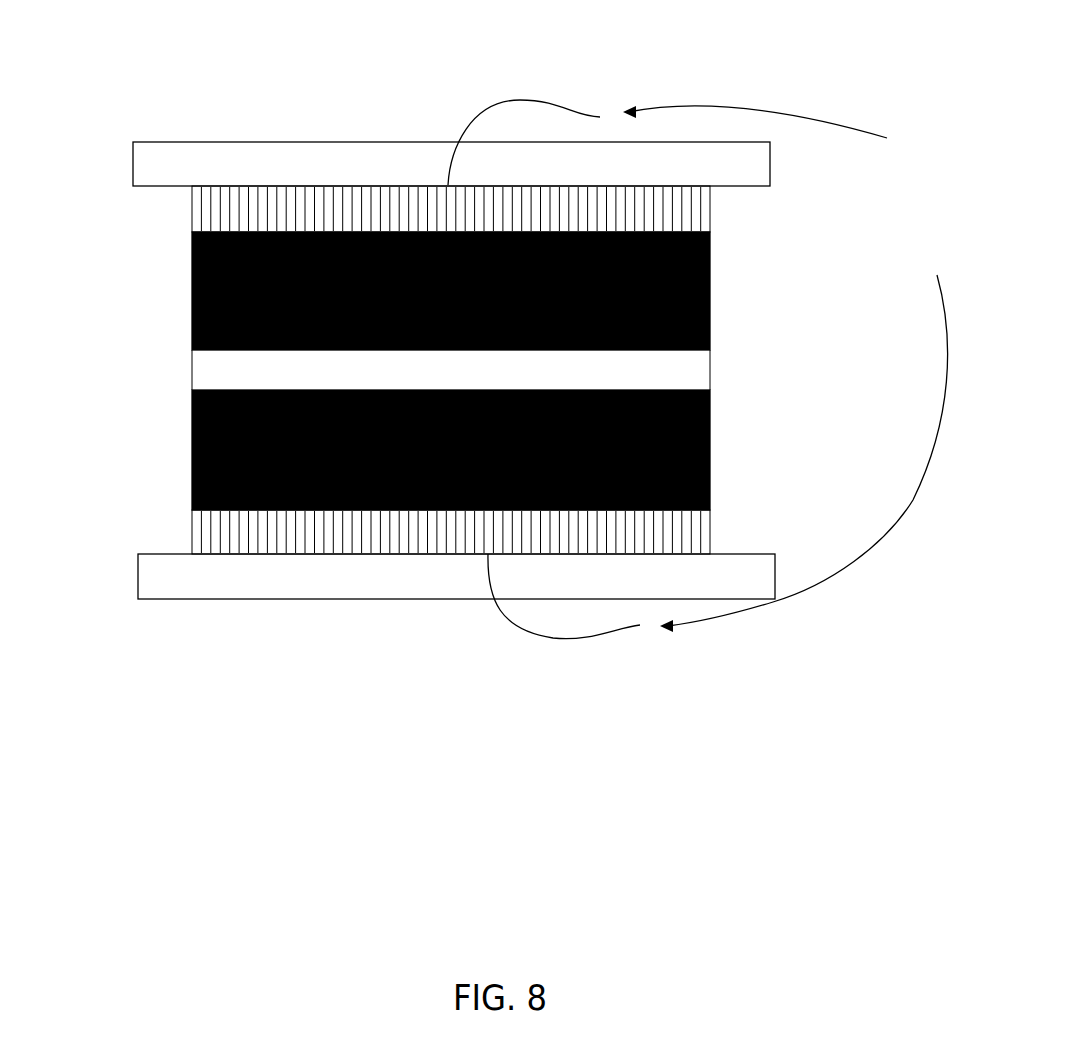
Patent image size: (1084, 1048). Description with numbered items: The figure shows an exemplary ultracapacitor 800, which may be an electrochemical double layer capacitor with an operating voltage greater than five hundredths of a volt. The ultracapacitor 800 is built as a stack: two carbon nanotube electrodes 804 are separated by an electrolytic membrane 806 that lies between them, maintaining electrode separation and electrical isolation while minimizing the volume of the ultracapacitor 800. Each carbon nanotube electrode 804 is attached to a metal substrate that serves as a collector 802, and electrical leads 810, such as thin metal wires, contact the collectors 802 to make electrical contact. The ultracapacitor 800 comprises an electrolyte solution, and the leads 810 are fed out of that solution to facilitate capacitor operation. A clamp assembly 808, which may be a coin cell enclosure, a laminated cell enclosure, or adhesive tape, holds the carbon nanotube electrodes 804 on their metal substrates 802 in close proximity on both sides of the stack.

The ultracapacitor 800 is at (250, 36).
The collector 802 is at (186, 214).
The carbon nanotube electrode 804 is at (186, 298).
The electrolytic membrane 806 is at (717, 372).
The clamp assembly 808 is at (776, 162).
The electrical lead 810 is at (703, 369).